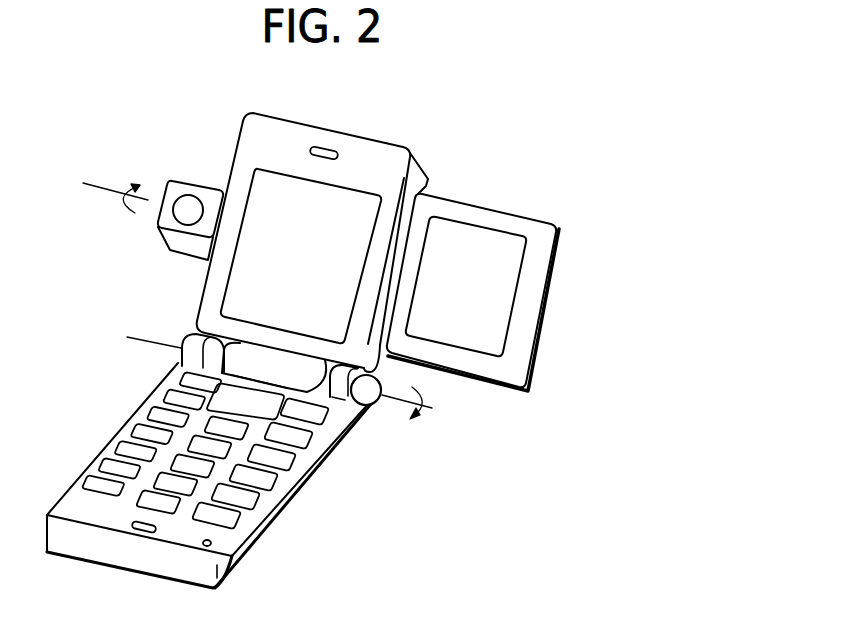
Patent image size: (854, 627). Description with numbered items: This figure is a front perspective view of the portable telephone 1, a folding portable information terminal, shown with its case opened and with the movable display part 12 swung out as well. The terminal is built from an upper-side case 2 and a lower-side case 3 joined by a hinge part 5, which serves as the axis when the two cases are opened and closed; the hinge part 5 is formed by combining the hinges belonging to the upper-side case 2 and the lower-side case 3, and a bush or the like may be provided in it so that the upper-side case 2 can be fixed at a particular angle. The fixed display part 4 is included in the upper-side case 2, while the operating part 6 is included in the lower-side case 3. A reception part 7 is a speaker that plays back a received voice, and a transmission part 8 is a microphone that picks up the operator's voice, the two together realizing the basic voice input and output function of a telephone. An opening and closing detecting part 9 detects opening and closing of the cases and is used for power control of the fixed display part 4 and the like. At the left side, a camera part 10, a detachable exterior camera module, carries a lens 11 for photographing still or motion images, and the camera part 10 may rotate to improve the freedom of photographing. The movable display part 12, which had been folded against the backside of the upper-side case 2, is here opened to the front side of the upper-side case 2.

The portable telephone 1 is at (255, 113).
The upper-side case 2 is at (426, 180).
The lower-side case 3 is at (308, 471).
The fixed display part 4 is at (303, 263).
The hinge part 5 is at (370, 407).
The operating part 6 is at (163, 360).
The reception part 7 is at (332, 150).
The transmission part 8 is at (140, 533).
The opening and closing detecting part 9 is at (214, 543).
The camera part 10 is at (180, 183).
The lens 11 is at (178, 215).
The movable display part 12 is at (478, 363).